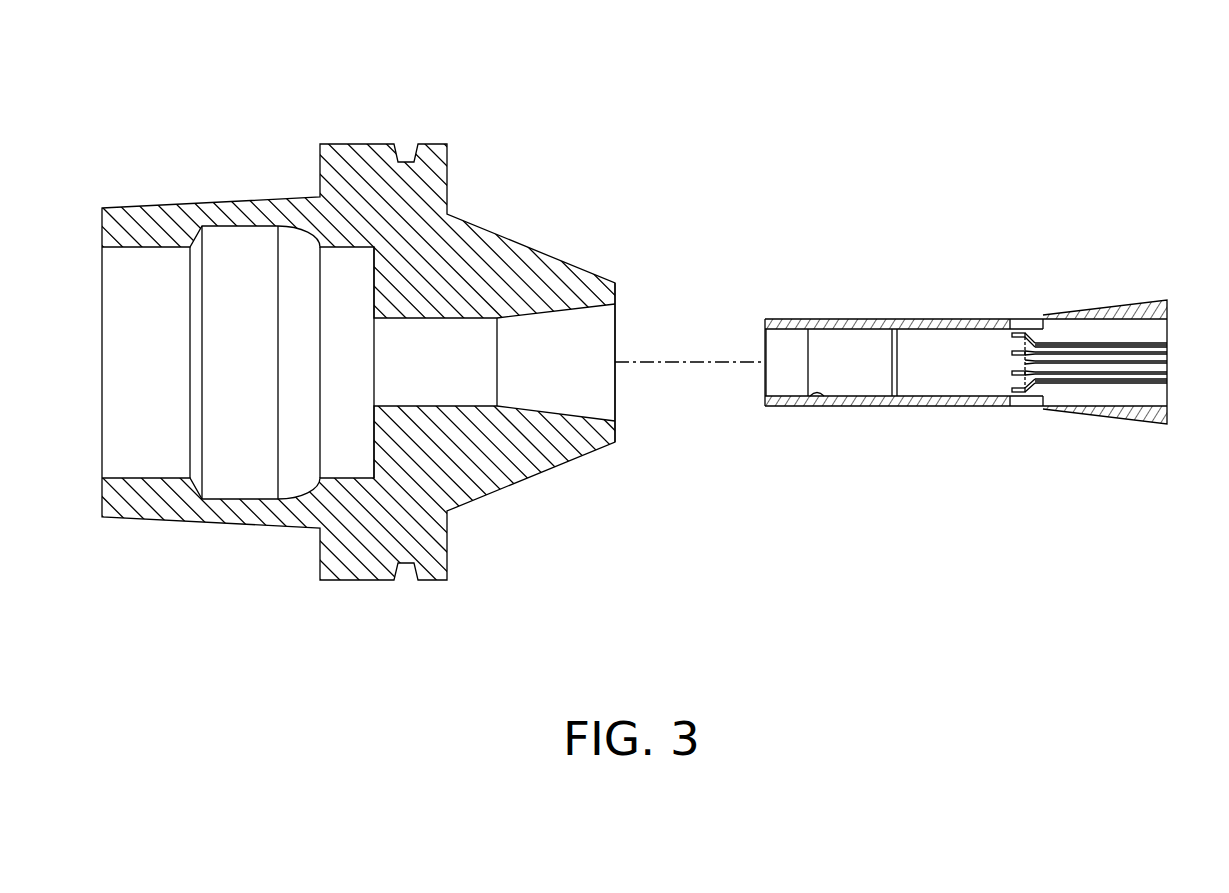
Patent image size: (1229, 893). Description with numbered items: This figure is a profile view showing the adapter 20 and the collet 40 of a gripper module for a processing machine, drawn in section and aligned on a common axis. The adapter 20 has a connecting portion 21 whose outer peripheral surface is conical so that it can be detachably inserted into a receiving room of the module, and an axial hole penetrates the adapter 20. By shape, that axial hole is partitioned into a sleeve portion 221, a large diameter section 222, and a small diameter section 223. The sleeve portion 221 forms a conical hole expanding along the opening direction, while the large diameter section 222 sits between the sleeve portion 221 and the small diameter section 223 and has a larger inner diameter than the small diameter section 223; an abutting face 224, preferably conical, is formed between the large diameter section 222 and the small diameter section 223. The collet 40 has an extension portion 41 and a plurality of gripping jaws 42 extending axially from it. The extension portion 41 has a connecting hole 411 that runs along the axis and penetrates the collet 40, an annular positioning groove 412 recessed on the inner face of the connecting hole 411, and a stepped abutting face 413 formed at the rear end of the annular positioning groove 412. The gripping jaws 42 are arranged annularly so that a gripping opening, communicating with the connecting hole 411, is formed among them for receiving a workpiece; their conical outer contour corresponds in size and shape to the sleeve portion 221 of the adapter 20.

The adapter 20 is at (498, 130).
The connecting portion 21 is at (212, 202).
The sleeve portion 221 is at (577, 390).
The large diameter section 222 is at (247, 478).
The small diameter section 223 is at (132, 465).
The abutting face 224 is at (198, 457).
The collet 40 is at (1005, 264).
The extension portion 41 is at (898, 318).
The connecting hole 411 is at (765, 387).
The annular positioning groove 412 is at (868, 387).
The stepped abutting face 413 is at (825, 402).
The gripping jaws 42 is at (1137, 304).